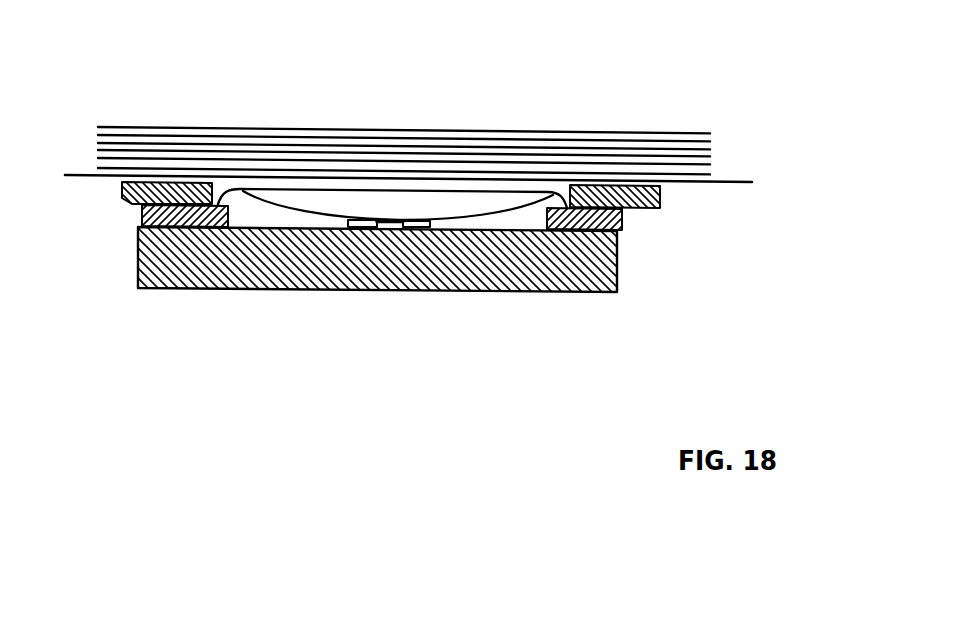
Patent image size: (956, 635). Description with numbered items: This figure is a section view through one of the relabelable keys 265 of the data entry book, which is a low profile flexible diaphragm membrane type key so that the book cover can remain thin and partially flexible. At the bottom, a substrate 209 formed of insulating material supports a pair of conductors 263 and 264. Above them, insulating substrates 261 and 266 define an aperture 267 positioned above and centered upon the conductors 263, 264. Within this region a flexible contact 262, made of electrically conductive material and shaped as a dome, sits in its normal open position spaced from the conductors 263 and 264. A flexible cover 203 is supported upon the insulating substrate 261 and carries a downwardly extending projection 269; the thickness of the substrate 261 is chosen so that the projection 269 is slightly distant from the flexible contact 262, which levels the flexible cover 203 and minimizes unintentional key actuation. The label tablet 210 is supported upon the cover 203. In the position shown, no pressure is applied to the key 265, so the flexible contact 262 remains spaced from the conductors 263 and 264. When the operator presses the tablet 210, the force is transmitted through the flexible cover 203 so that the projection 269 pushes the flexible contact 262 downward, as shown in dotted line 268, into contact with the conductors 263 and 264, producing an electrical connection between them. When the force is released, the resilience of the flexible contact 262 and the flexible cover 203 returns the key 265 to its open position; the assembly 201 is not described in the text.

The lens assembly 201 is at (750, 200).
The flexible cover 203 is at (752, 182).
The substrate 209 is at (612, 268).
The label tablet 210 is at (718, 183).
The insulating substrate 261 is at (660, 196).
The flexible contact 262 is at (260, 190).
The conductor 263 is at (356, 228).
The conductor 264 is at (422, 228).
The key 265 is at (130, 418).
The insulating substrate 266 is at (630, 222).
The aperture 267 is at (566, 193).
The dotted line 268 is at (470, 201).
The projection 269 is at (390, 186).